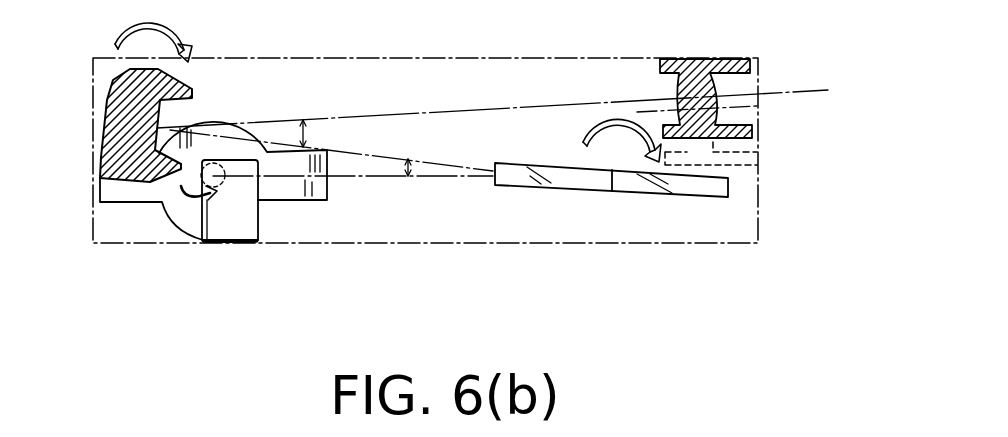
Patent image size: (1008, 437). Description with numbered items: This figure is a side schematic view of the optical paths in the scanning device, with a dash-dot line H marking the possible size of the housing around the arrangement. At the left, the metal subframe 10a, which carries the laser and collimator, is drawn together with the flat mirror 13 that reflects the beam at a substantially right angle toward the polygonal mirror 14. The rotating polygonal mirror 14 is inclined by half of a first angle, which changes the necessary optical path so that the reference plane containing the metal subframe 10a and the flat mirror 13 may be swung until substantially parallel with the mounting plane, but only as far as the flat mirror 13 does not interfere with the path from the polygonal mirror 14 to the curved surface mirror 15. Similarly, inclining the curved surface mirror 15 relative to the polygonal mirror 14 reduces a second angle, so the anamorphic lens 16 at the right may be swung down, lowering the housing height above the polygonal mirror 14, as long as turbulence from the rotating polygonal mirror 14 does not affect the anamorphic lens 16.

The metal subframe 10a is at (181, 243).
The flat mirror 13 is at (246, 244).
The polygonal mirror 14 is at (638, 188).
The curved surface mirror 15 is at (157, 128).
The anamorphic lens 16 is at (720, 59).
The housing size line H is at (468, 244).